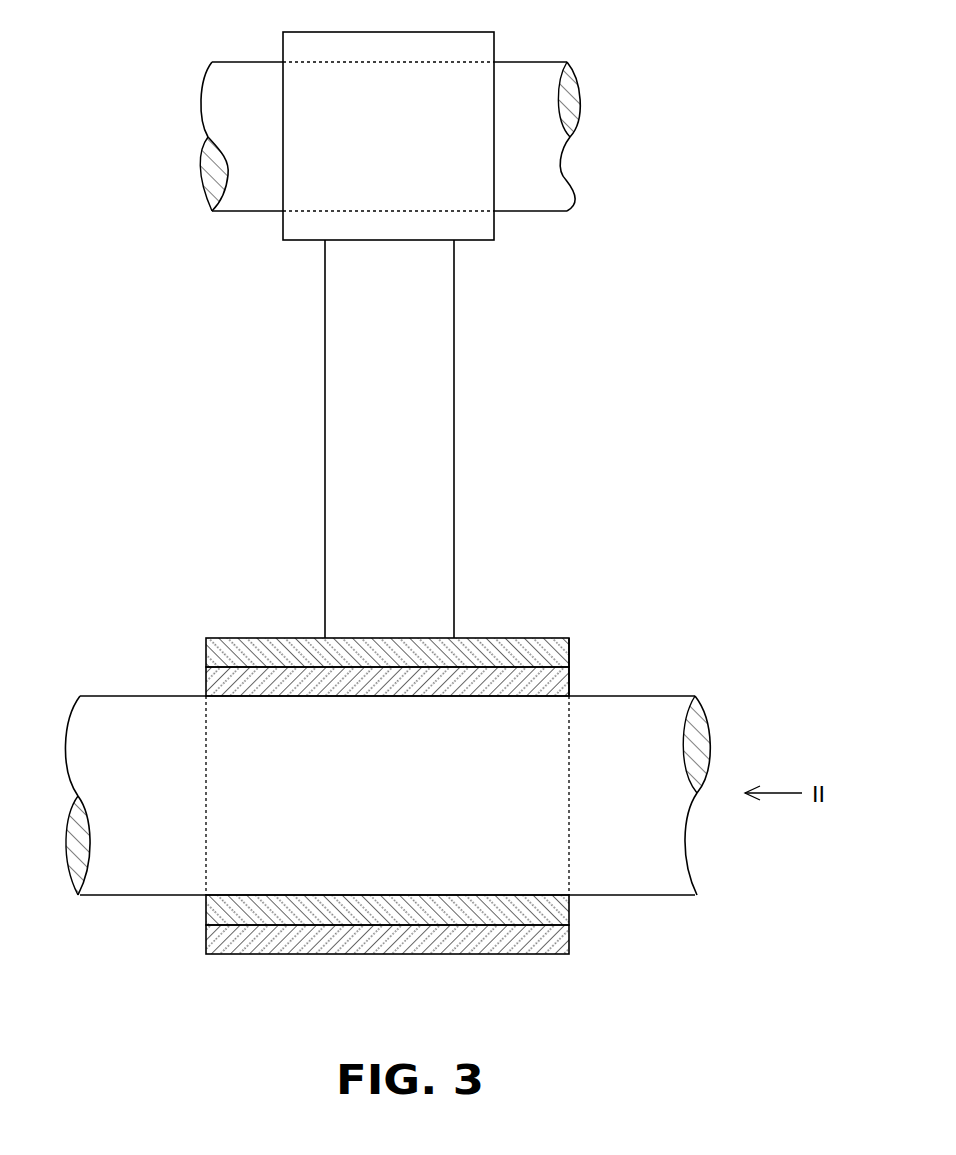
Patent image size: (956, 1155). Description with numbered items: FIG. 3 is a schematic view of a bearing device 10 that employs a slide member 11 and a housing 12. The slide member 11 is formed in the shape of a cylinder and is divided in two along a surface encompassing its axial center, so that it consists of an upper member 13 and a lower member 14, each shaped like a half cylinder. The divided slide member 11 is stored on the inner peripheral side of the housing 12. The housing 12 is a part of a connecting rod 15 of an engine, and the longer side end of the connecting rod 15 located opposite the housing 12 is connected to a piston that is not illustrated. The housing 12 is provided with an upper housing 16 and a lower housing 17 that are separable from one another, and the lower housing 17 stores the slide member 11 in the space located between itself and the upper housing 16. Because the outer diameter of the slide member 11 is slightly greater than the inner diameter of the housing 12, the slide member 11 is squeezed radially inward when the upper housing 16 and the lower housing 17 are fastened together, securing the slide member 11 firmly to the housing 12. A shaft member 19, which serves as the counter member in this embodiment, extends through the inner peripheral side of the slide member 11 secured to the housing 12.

The bearing device 10 is at (410, 617).
The slide member 11 is at (401, 948).
The housing 12 is at (204, 630).
The upper member 13 is at (206, 680).
The lower member 14 is at (205, 908).
The connecting rod 15 is at (325, 343).
The upper housing 16 is at (570, 652).
The lower housing 17 is at (571, 940).
The shaft member 19 is at (108, 696).